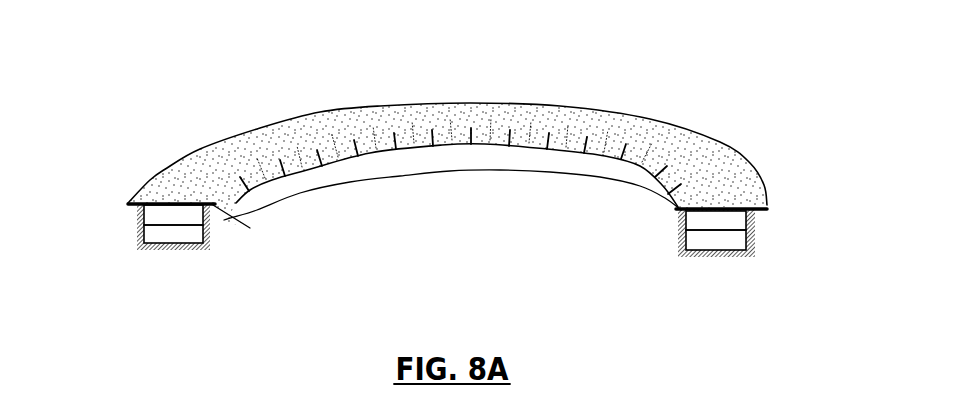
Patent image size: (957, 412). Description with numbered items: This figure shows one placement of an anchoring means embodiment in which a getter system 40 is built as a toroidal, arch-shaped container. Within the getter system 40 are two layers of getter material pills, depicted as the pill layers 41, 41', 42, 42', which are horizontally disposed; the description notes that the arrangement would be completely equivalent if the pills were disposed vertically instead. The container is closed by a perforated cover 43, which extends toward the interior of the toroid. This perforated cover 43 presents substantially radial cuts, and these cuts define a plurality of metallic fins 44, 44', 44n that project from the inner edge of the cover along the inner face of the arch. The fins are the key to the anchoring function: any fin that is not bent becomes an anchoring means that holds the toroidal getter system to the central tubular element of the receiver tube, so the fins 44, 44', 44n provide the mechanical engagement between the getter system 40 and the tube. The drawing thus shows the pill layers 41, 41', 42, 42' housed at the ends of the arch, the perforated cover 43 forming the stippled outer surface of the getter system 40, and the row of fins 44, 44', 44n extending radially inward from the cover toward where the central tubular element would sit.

The getter system 40 is at (691, 81).
The getter material pill layer 41 is at (151, 266).
The getter material pill layer 41' is at (712, 281).
The getter material pill layer 42 is at (120, 191).
The getter material pill layer 42' is at (659, 261).
The perforated cover 43 is at (290, 137).
The metallic fin 44 is at (351, 189).
The metallic fin 44' is at (452, 185).
The metallic fin 44n is at (675, 210).